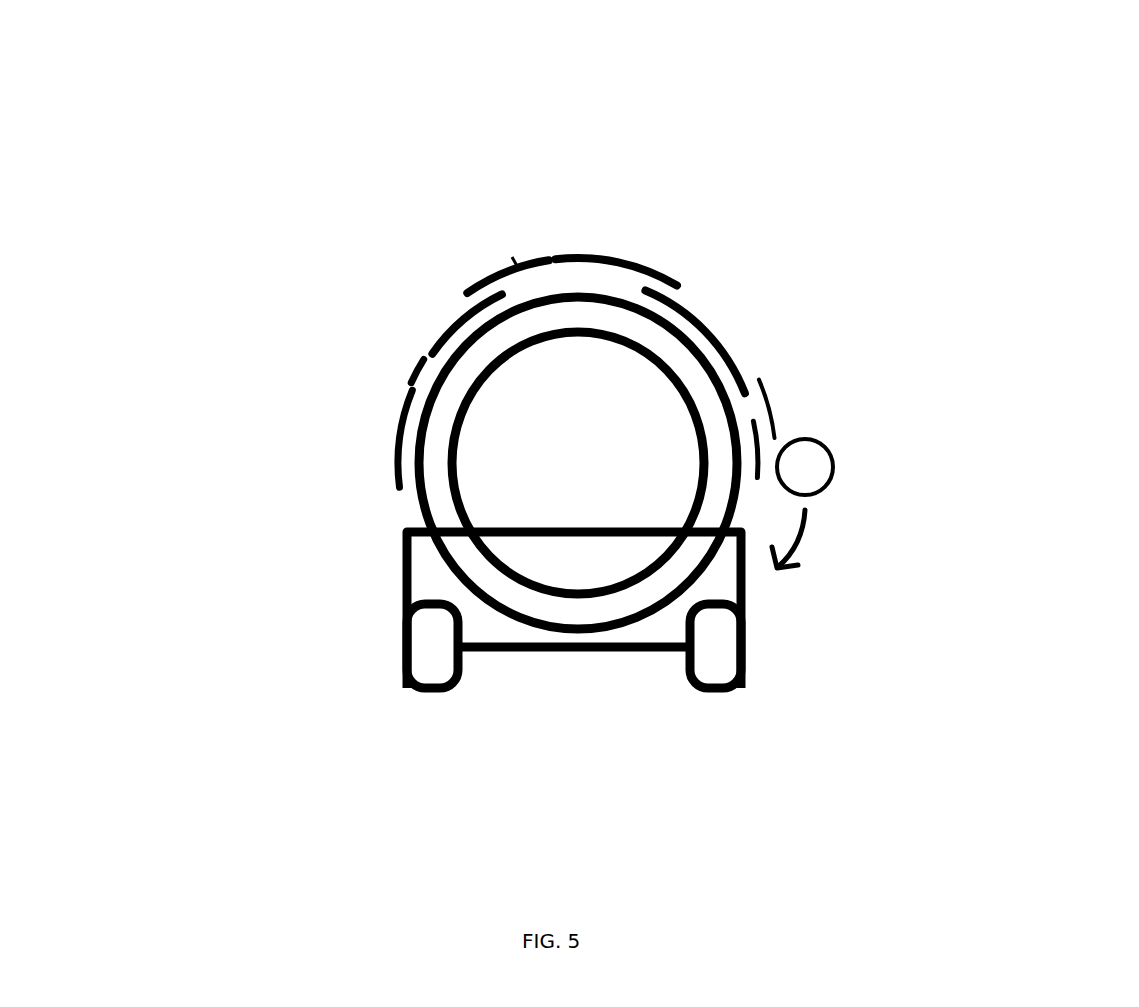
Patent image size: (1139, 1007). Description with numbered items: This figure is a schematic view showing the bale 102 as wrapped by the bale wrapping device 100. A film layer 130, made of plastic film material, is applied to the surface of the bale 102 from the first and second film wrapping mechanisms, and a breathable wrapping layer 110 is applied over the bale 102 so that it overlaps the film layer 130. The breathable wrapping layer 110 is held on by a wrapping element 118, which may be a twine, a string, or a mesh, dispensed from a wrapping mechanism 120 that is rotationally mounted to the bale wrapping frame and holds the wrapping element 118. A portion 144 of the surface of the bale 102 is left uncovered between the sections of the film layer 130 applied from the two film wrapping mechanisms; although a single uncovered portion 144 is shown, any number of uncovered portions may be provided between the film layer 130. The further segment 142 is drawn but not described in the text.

The bale wrapping device 100 is at (393, 616).
The bale 102 is at (405, 515).
The breathable wrapping layer 110 is at (508, 236).
The wrapping element 118 is at (780, 382).
The wrapping mechanism 120 is at (849, 483).
The film layer 130 is at (416, 333).
The top cover segment 142 is at (473, 263).
The portion 144 is at (605, 272).